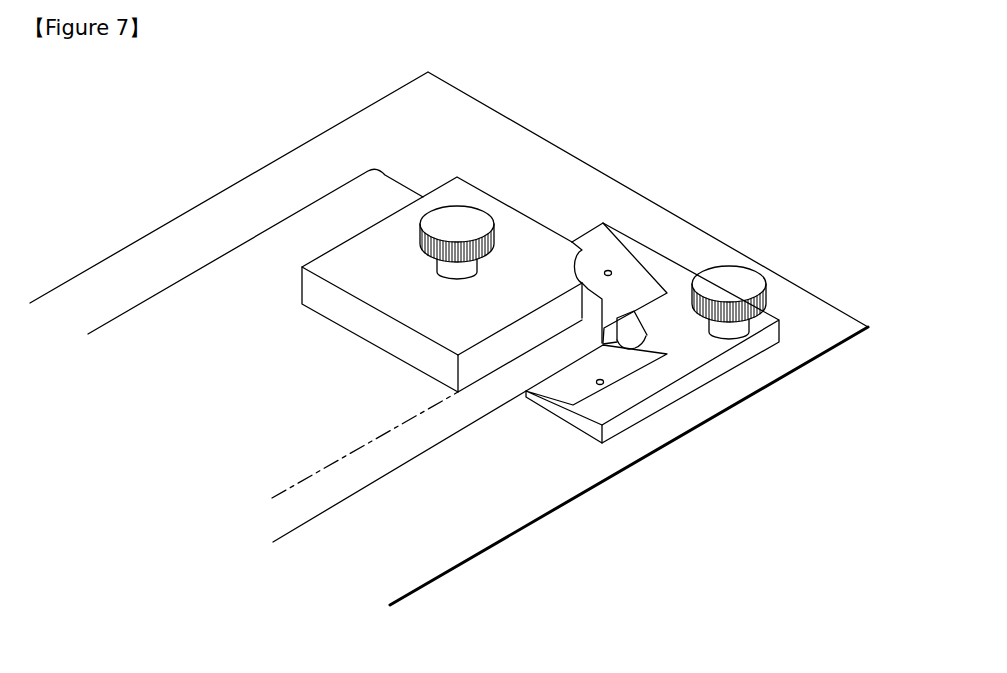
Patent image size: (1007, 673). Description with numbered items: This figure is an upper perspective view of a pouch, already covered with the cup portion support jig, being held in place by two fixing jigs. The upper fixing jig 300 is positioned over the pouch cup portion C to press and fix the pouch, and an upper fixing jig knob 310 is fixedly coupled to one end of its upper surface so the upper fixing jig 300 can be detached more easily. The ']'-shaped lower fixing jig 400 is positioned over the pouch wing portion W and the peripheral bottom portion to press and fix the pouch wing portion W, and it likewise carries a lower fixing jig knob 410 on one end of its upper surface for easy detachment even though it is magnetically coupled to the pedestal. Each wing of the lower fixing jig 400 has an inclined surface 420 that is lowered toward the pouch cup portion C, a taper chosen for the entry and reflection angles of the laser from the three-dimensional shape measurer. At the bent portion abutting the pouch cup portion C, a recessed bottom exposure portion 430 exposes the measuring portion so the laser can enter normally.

The upper fixing jig 300 is at (472, 186).
The upper fixing jig knob 310 is at (480, 220).
The lower fixing jig 400 is at (678, 265).
The lower fixing jig knob 410 is at (749, 283).
The inclined surface 420 is at (599, 267).
The bottom exposure portion 430 is at (640, 341).
The pouch cup portion C is at (355, 480).
The pouch wing portion W is at (511, 446).